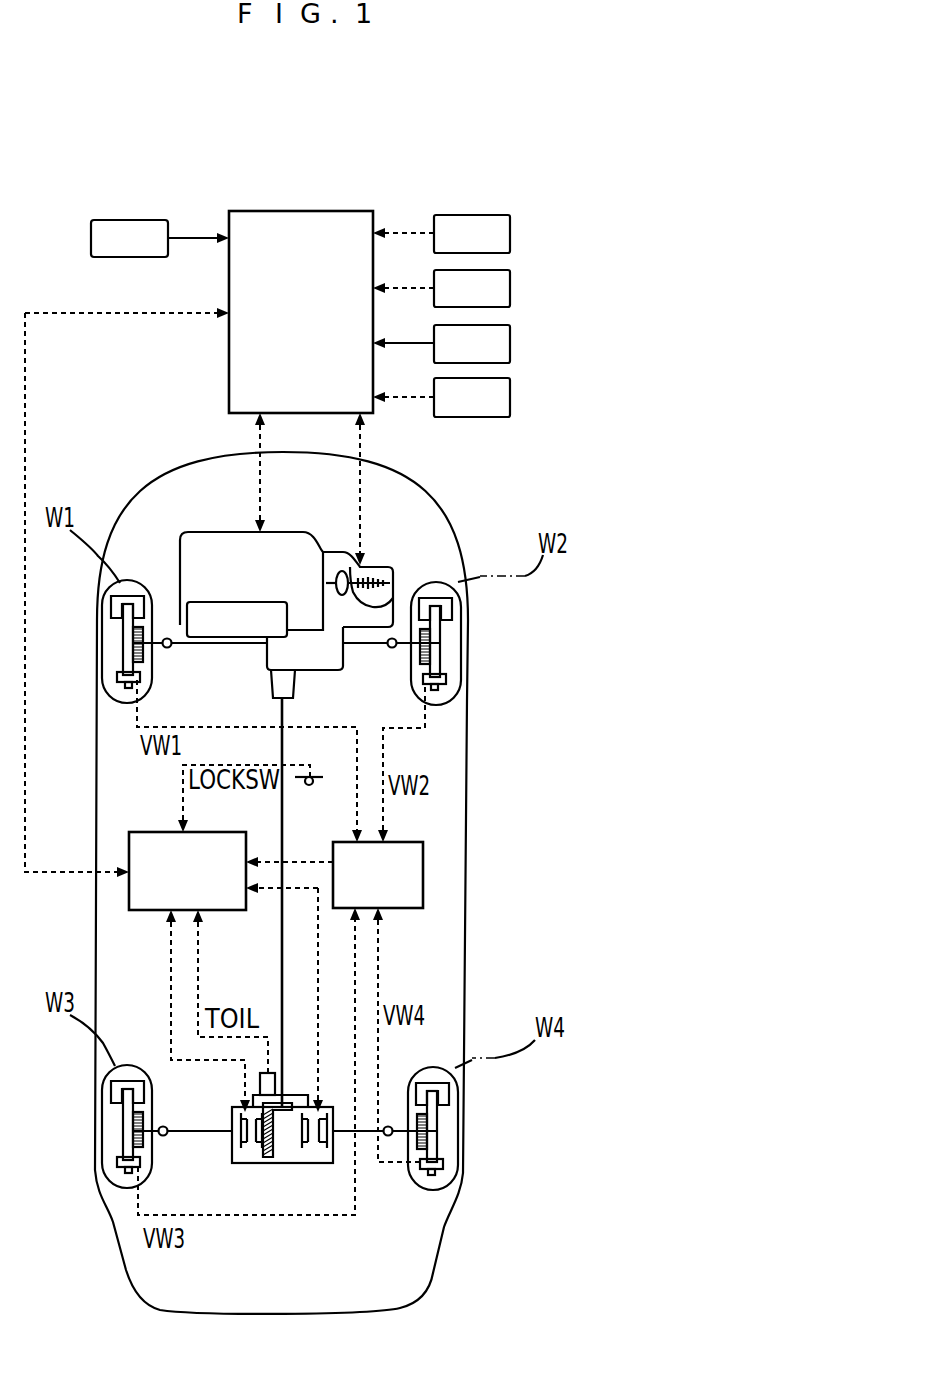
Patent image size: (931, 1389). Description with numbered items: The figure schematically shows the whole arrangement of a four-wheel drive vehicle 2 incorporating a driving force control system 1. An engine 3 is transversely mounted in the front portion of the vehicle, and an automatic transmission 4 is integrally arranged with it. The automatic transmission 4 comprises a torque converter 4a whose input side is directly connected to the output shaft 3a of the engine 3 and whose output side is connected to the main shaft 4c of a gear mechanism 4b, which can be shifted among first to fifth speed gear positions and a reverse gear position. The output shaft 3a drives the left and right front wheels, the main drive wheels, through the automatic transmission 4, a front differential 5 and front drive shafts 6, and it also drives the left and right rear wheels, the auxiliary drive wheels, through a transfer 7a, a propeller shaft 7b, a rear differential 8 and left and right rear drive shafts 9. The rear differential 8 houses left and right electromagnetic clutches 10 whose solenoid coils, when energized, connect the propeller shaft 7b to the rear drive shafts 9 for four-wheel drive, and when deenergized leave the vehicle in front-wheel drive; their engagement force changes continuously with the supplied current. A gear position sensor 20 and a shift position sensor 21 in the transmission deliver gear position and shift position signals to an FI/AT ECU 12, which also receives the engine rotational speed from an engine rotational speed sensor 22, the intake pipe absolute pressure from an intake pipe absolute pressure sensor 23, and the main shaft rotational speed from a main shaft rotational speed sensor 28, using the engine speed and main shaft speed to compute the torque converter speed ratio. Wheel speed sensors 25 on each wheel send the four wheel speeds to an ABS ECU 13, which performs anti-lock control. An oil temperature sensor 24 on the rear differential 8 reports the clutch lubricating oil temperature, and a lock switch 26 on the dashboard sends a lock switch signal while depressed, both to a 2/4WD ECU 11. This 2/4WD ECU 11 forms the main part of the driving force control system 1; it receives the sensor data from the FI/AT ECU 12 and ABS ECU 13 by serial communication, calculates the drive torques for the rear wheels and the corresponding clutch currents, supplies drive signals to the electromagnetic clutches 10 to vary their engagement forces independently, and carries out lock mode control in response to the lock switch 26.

The driving force control system 1 is at (540, 963).
The four-wheel drive vehicle 2 is at (468, 753).
The engine 3 is at (210, 532).
The output shaft 3a is at (327, 578).
The automatic transmission 4 is at (405, 563).
The torque converter 4a is at (357, 567).
The gear mechanism 4b is at (370, 579).
The main shaft 4c is at (393, 598).
The front differential 5 is at (300, 671).
The front drive shafts 6 is at (185, 645).
The transfer 7a is at (270, 674).
The propeller shaft 7b is at (282, 987).
The rear differential 8 is at (290, 1164).
The rear drive shafts 9 is at (187, 1133).
The electromagnetic clutches 10 is at (243, 1149).
The 2/4WD ECU 11 is at (172, 832).
The FI/AT ECU 12 is at (300, 211).
The ABS ECU 13 is at (424, 883).
The gear position sensor 20 is at (510, 226).
The shift position sensor 21 is at (510, 281).
The engine rotational speed sensor 22 is at (510, 336).
The intake pipe absolute pressure sensor 23 is at (510, 391).
The oil temperature sensor 24 is at (276, 1073).
The wheel speed sensors 25 is at (118, 671).
The lock switch 26 is at (309, 786).
The main shaft rotational speed sensor 28 is at (150, 219).